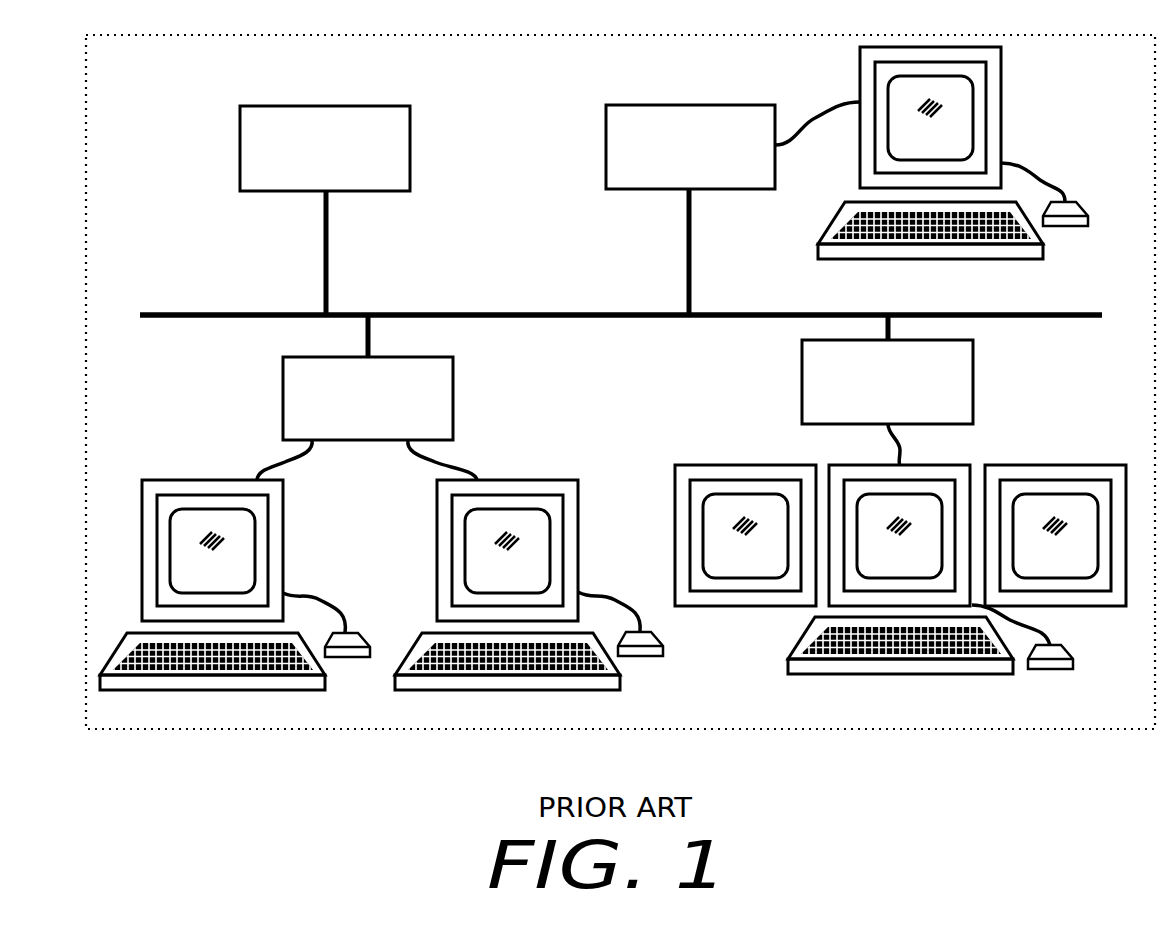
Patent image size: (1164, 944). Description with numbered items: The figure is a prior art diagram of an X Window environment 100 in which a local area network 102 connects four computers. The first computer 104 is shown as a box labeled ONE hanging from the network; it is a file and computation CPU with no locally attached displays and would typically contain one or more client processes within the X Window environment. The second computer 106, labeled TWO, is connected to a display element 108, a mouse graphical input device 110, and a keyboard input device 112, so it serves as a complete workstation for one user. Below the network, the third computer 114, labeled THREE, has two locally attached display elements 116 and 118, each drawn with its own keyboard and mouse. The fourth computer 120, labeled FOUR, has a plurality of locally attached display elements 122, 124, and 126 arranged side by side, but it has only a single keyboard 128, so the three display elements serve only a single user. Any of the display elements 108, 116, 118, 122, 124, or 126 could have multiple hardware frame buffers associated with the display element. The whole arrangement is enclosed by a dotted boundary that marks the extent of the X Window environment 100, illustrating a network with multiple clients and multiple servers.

The X Window environment 100 is at (870, 730).
The local area network 102 is at (500, 313).
The first computer 104 is at (325, 106).
The second computer 106 is at (690, 105).
The display element 108 is at (1003, 110).
The mouse graphical input device 110 is at (1070, 227).
The keyboard input device 112 is at (1000, 259).
The third computer 114 is at (418, 357).
The display element 116 is at (283, 524).
The display element 118 is at (578, 508).
The fourth computer 120 is at (973, 395).
The display element 122 is at (715, 605).
The display element 124 is at (935, 465).
The display element 126 is at (1060, 605).
The keyboard 128 is at (985, 673).